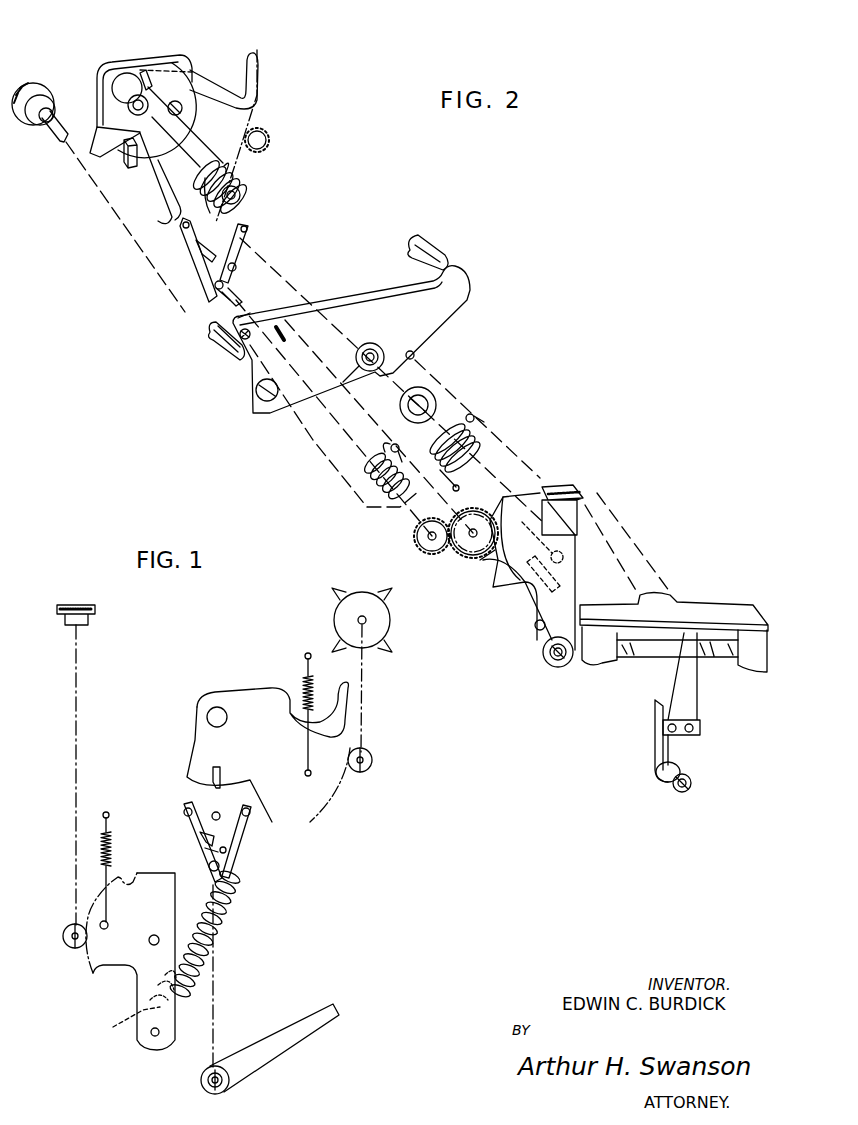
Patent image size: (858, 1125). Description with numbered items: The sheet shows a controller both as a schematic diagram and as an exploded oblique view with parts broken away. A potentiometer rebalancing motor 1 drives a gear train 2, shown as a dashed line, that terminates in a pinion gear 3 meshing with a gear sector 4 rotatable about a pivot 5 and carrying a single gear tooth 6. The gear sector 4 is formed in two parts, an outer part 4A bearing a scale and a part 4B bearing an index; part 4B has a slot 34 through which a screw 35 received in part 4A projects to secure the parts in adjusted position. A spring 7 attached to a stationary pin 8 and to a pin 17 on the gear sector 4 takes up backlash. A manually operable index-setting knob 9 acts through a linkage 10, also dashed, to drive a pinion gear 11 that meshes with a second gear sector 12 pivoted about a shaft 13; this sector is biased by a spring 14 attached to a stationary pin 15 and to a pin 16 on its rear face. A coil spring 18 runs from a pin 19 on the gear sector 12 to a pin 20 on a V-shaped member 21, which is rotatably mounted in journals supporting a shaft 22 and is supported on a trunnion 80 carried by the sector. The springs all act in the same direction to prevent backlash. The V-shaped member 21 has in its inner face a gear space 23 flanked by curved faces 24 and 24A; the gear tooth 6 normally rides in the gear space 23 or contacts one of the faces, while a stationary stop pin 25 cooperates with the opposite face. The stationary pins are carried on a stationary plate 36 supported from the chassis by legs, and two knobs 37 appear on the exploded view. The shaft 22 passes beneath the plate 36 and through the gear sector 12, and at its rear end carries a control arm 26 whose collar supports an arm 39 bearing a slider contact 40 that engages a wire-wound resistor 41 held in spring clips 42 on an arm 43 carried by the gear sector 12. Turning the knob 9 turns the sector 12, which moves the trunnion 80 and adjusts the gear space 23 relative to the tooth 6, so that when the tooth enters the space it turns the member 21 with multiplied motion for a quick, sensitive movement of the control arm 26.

In FIG. 1, the potentiometer rebalancing motor 1 is at (357, 592).
In FIG. 1, the gear train or linkage 2 is at (364, 700).
In FIG. 2, the pinion gear 3 is at (268, 134).
In FIG. 1, the pinion gear 3 is at (373, 754).
In FIG. 2, the gear sector 4 is at (207, 122).
In FIG. 1, the gear sector 4 is at (346, 803).
In FIG. 2, the outer part of gear sector 4A is at (206, 93).
In FIG. 2, the gear sector part 4B is at (182, 60).
In FIG. 2, the pivot 5 is at (345, 338).
In FIG. 1, the pivot 5 is at (212, 710).
In FIG. 2, the gear tooth 6 is at (126, 168).
In FIG. 1, the gear tooth 6 is at (220, 768).
In FIG. 2, the spring 7 is at (236, 187).
In FIG. 1, the spring 7 is at (303, 682).
In FIG. 2, the stationary pin 8 is at (363, 343).
In FIG. 1, the stationary pin 8 is at (307, 652).
In FIG. 2, the index-setting knob 9 is at (38, 92).
In FIG. 1, the index-setting knob 9 is at (64, 603).
In FIG. 2, the linkage 10 is at (52, 132).
In FIG. 1, the linkage 10 is at (72, 760).
In FIG. 2, the pinion gear 11 is at (456, 552).
In FIG. 1, the pinion gear 11 is at (64, 946).
In FIG. 2, the gear sector 12 is at (500, 576).
In FIG. 1, the gear sector 12 is at (92, 970).
In FIG. 2, the shaft 13 is at (543, 498).
In FIG. 1, the shaft 13 is at (148, 940).
In FIG. 2, the spring 14 is at (480, 435).
In FIG. 1, the spring 14 is at (110, 852).
In FIG. 2, the stationary pin 15 is at (418, 356).
In FIG. 1, the stationary pin 15 is at (104, 812).
In FIG. 2, the pin 16 is at (486, 548).
In FIG. 1, the pin 16 is at (107, 922).
In FIG. 2, the pin 17 is at (147, 84).
In FIG. 1, the pin 17 is at (312, 773).
In FIG. 2, the coil spring 18 is at (378, 475).
In FIG. 1, the coil spring 18 is at (212, 930).
In FIG. 2, the pin 19 is at (532, 626).
In FIG. 1, the pin 19 is at (118, 1026).
In FIG. 2, the pin 20 is at (226, 266).
In FIG. 1, the pin 20 is at (222, 866).
In FIG. 2, the V-shaped member 21 is at (213, 288).
In FIG. 1, the V-shaped member 21 is at (204, 854).
In FIG. 2, the shaft 22 is at (218, 303).
In FIG. 1, the shaft 22 is at (216, 985).
In FIG. 2, the gear space 23 is at (200, 254).
In FIG. 1, the gear space 23 is at (200, 840).
In FIG. 2, the curved face 24 is at (185, 235).
In FIG. 1, the curved face 24 is at (183, 822).
In FIG. 2, the curved face 24A is at (249, 233).
In FIG. 1, the curved face 24A is at (238, 842).
In FIG. 2, the stationary pin 25 is at (553, 570).
In FIG. 1, the stationary pin 25 is at (216, 811).
In FIG. 2, the control arm 26 is at (669, 677).
In FIG. 1, the control arm 26 is at (329, 1053).
In FIG. 2, the slot 34 is at (175, 103).
In FIG. 2, the screw 35 is at (182, 112).
In FIG. 2, the stationary plate 36 is at (450, 317).
In FIG. 2, the knob 37 is at (440, 255).
In FIG. 2, the arm 39 is at (664, 754).
In FIG. 2, the slider contact 40 is at (692, 690).
In FIG. 2, the variable resistor 41 is at (652, 652).
In FIG. 2, the spring clips 42 is at (600, 660).
In FIG. 2, the arm 43 is at (680, 607).
In FIG. 2, the trunnion 80 is at (546, 665).
In FIG. 1, the trunnion 80 is at (152, 1036).